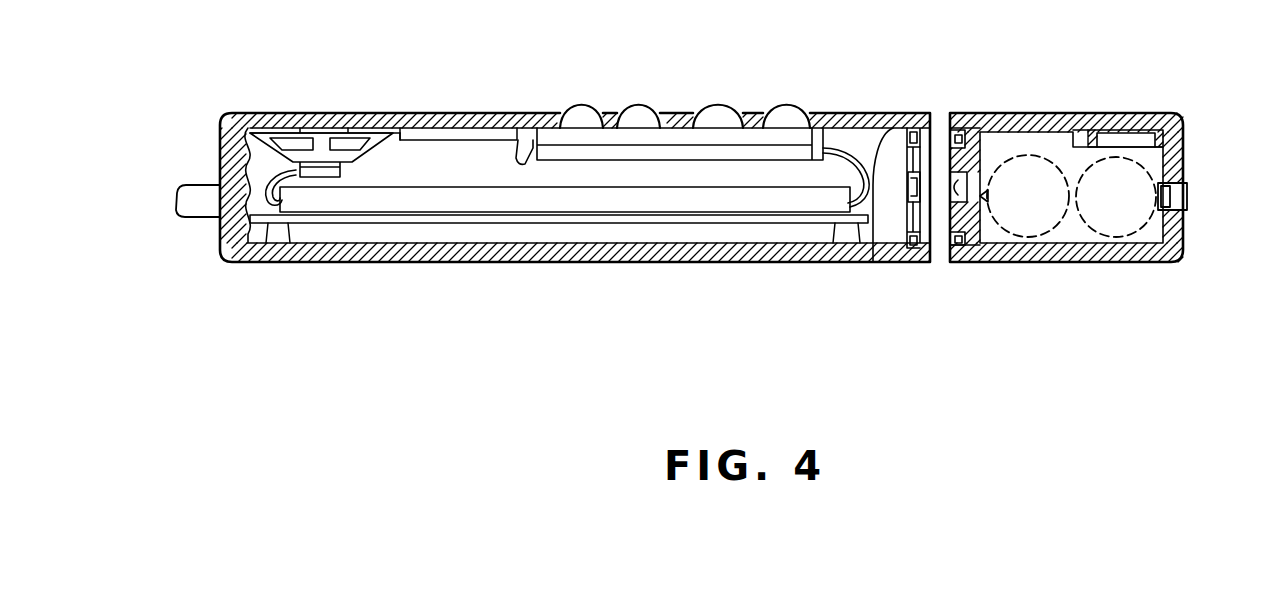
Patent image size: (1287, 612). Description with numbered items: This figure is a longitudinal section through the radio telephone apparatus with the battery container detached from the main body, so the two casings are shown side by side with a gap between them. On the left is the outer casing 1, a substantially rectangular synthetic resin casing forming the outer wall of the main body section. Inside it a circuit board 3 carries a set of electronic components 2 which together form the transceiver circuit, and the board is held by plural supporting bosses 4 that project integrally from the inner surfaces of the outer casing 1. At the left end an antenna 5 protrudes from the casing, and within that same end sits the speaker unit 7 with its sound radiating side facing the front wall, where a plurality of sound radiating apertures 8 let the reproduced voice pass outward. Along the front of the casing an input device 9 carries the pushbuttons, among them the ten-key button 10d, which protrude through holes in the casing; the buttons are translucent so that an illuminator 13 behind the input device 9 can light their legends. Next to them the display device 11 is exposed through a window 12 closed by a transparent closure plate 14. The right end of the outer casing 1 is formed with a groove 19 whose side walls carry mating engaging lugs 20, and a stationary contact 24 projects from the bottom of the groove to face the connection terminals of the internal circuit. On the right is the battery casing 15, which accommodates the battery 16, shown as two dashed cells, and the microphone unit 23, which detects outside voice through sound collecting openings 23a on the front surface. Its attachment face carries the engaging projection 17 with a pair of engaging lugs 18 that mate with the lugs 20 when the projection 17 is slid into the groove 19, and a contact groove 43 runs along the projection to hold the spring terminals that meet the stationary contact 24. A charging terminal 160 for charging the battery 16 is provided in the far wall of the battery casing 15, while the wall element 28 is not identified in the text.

The outer casing 1 is at (298, 262).
The electronic components 2 is at (530, 203).
The circuit board 3 is at (583, 217).
The supporting bosses 4 is at (835, 232).
The antenna 5 is at (193, 207).
The speaker unit 7 is at (363, 157).
The sound radiating apertures 8 is at (350, 113).
The input device 9 is at (682, 113).
The ten-key button 10d is at (778, 113).
The display device 11 is at (507, 113).
The window 12 is at (417, 113).
The closure plate 14 is at (447, 113).
The illuminator 13 is at (827, 113).
The battery casing 15 is at (1170, 262).
The battery 16 is at (1043, 237).
The engaging projection 17 is at (950, 185).
The engaging lugs 18 is at (958, 248).
The groove 19 is at (942, 113).
The mating engaging lugs 20 is at (913, 240).
The microphone unit 23 is at (1167, 113).
The sound collecting openings 23a is at (1133, 113).
The stationary contact 24 is at (873, 233).
The battery case wall 28 is at (1047, 113).
The contact groove 43 is at (999, 245).
The charging terminal 160 is at (1187, 199).